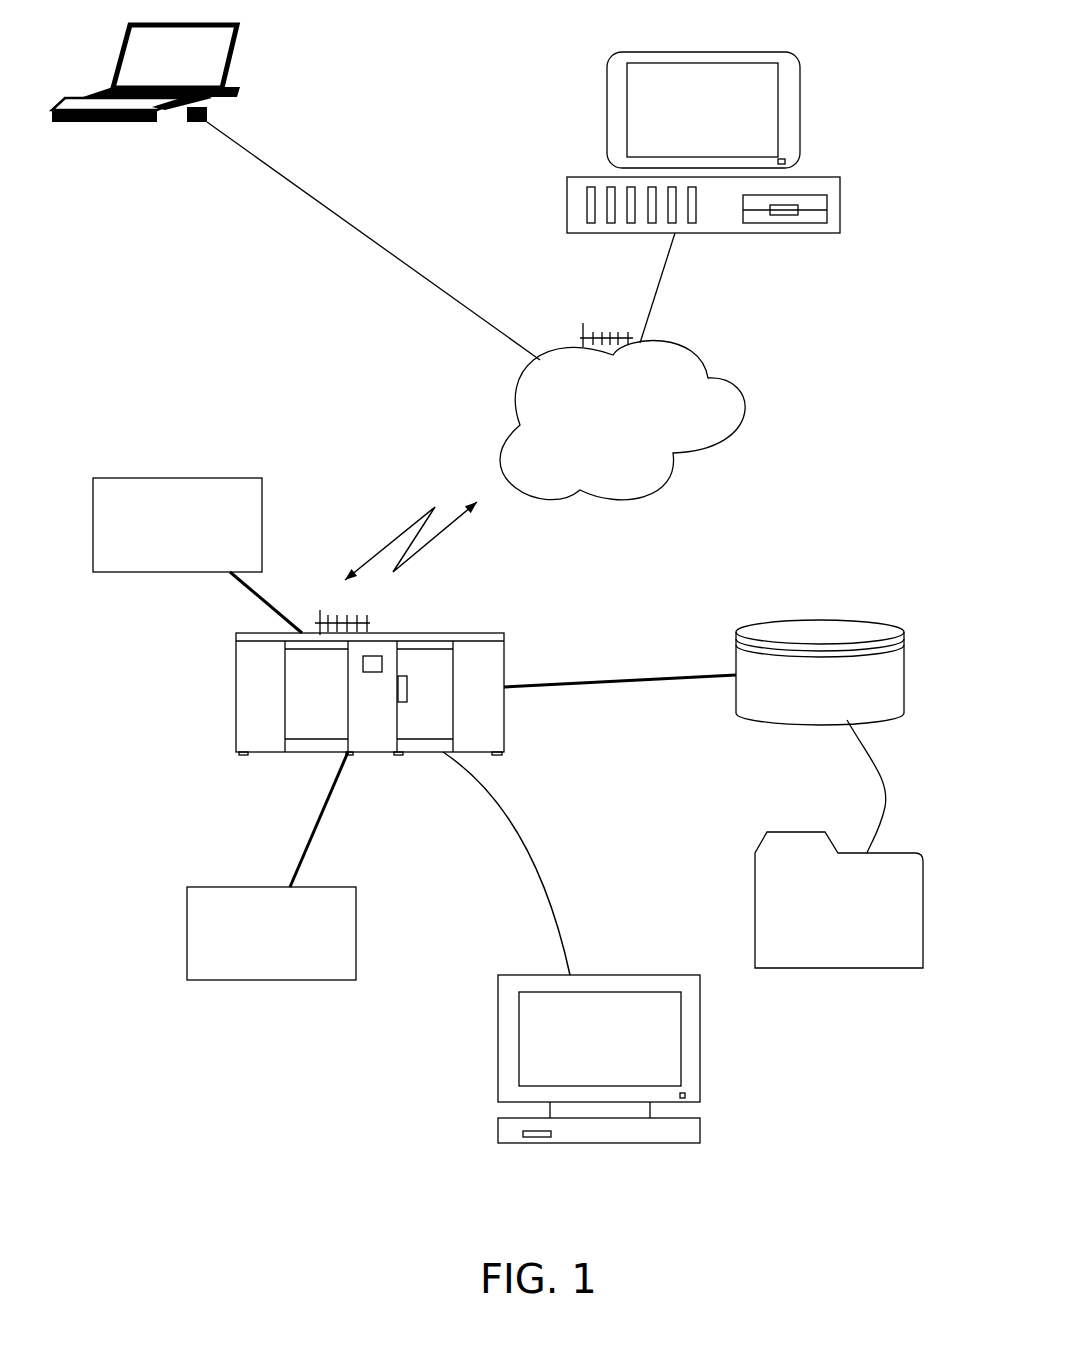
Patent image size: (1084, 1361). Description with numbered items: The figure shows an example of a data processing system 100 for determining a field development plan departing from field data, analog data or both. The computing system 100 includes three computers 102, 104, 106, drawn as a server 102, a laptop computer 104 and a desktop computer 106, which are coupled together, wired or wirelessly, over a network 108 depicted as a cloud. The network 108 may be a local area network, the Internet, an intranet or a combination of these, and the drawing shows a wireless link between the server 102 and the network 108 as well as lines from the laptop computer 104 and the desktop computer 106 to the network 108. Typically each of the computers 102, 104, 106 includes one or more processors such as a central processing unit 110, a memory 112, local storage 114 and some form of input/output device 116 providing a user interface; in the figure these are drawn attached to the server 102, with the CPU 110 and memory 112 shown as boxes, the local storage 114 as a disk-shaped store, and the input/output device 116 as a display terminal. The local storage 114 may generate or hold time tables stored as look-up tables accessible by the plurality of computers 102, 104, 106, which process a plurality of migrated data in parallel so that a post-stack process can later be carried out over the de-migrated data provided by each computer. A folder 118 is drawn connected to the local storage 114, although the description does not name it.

The system 100 is at (838, 1122).
The computer 102 is at (504, 660).
The computer 104 is at (240, 95).
The computer 106 is at (782, 233).
The network 108 is at (520, 417).
The central processing unit 110 is at (158, 478).
The memory 112 is at (187, 923).
The local storage 114 is at (820, 618).
The input/output device 116 is at (500, 1060).
The data folder 118 is at (755, 900).